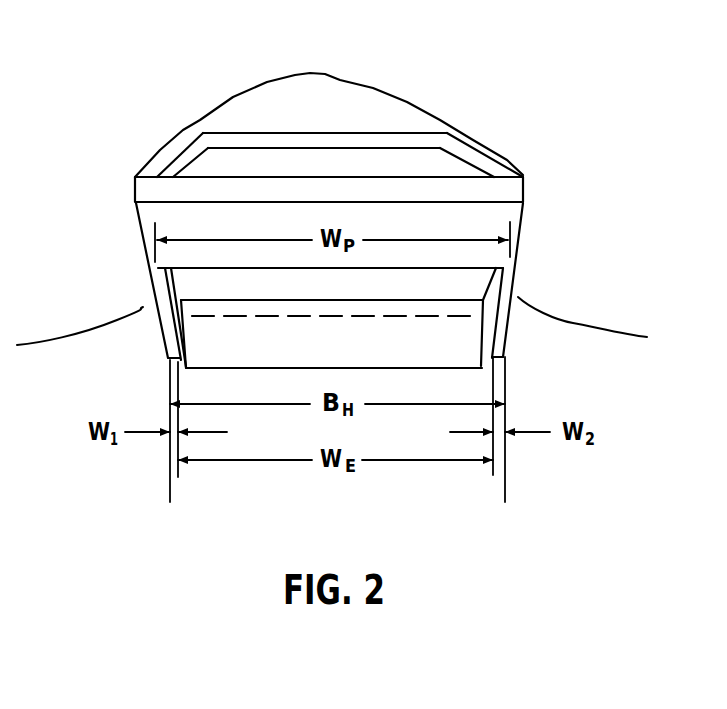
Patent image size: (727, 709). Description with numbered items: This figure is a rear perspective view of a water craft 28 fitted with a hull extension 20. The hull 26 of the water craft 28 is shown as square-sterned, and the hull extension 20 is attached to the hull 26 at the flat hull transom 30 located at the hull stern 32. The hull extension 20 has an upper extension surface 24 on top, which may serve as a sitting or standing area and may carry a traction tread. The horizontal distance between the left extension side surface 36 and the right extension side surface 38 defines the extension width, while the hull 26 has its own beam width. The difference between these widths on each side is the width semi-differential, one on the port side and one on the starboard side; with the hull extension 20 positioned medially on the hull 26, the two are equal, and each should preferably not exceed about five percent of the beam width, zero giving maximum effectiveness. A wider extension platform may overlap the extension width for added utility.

The hull extension 20 is at (473, 333).
The upper extension surface 24 is at (198, 287).
The hull 26 is at (157, 157).
The water craft 28 is at (207, 100).
The hull transom 30 is at (527, 227).
The hull stern 32 is at (527, 202).
The left extension side surface 36 is at (178, 288).
The right extension side surface 38 is at (495, 300).